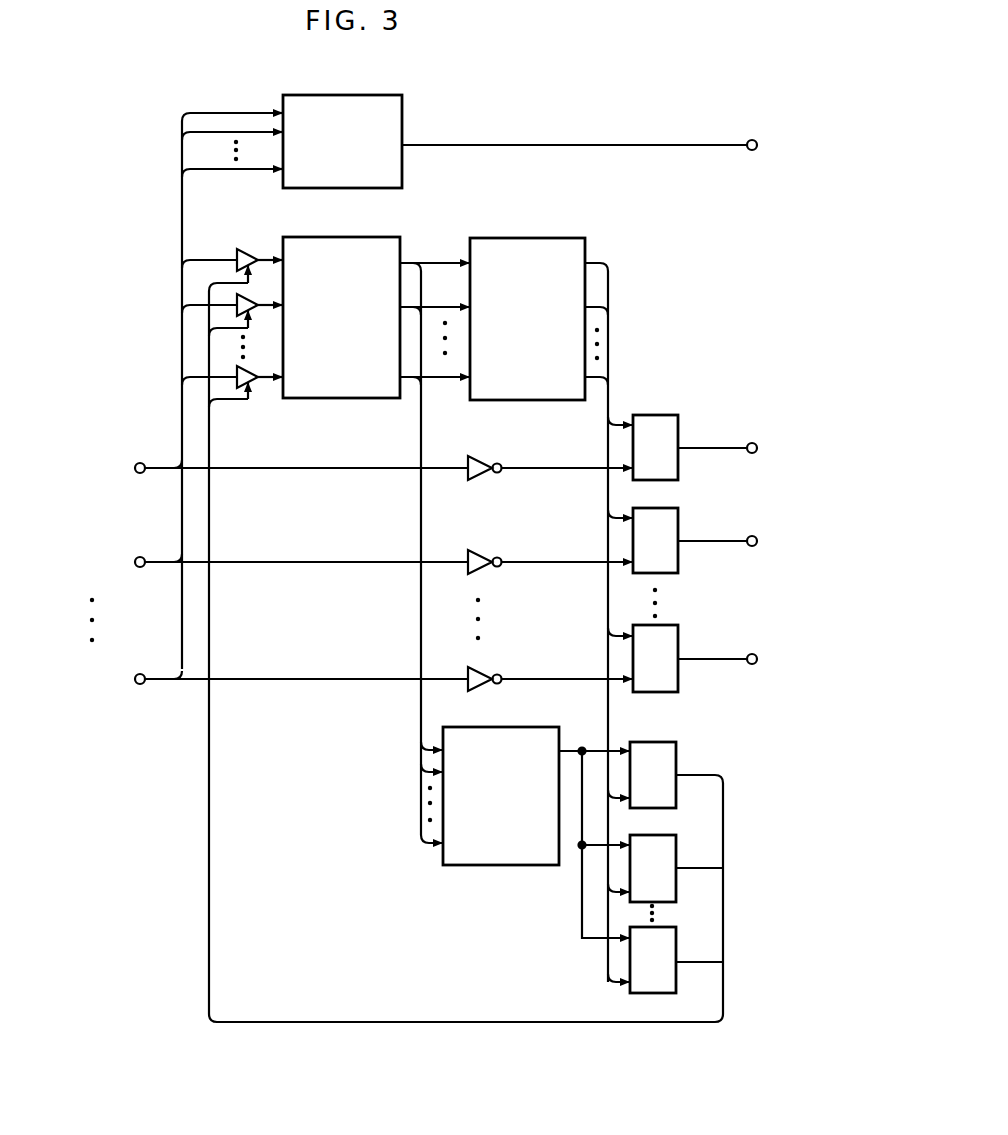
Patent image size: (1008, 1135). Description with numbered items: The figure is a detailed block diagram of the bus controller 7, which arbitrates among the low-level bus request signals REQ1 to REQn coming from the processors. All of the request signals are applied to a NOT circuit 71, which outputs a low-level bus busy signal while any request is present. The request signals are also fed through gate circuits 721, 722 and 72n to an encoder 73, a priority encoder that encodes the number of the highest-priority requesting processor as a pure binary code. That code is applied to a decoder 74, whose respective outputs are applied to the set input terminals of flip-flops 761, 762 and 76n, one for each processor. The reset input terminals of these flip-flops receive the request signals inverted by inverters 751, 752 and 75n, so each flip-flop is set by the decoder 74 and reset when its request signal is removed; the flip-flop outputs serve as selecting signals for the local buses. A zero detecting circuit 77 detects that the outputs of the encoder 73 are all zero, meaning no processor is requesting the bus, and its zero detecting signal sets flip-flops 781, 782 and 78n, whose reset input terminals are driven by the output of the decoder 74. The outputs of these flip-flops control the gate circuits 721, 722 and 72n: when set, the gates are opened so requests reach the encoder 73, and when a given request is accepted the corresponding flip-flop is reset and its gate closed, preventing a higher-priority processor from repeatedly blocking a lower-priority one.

The bus controller 7 is at (605, 84).
The NOT circuit 71 is at (370, 104).
The encoder 73 is at (352, 246).
The decoder 74 is at (540, 247).
The gate circuit 721 is at (241, 250).
The gate circuit 722 is at (244, 308).
The gate circuit 72n is at (244, 376).
The inverter 751 is at (484, 466).
The inverter 752 is at (484, 560).
The inverter 75n is at (484, 677).
The flip-flop 761 is at (664, 422).
The flip-flop 762 is at (668, 518).
The flip-flop 76n is at (669, 630).
The zero detecting circuit 77 is at (520, 727).
The flip-flop 781 is at (663, 746).
The flip-flop 782 is at (663, 840).
The flip-flop 78n is at (663, 932).